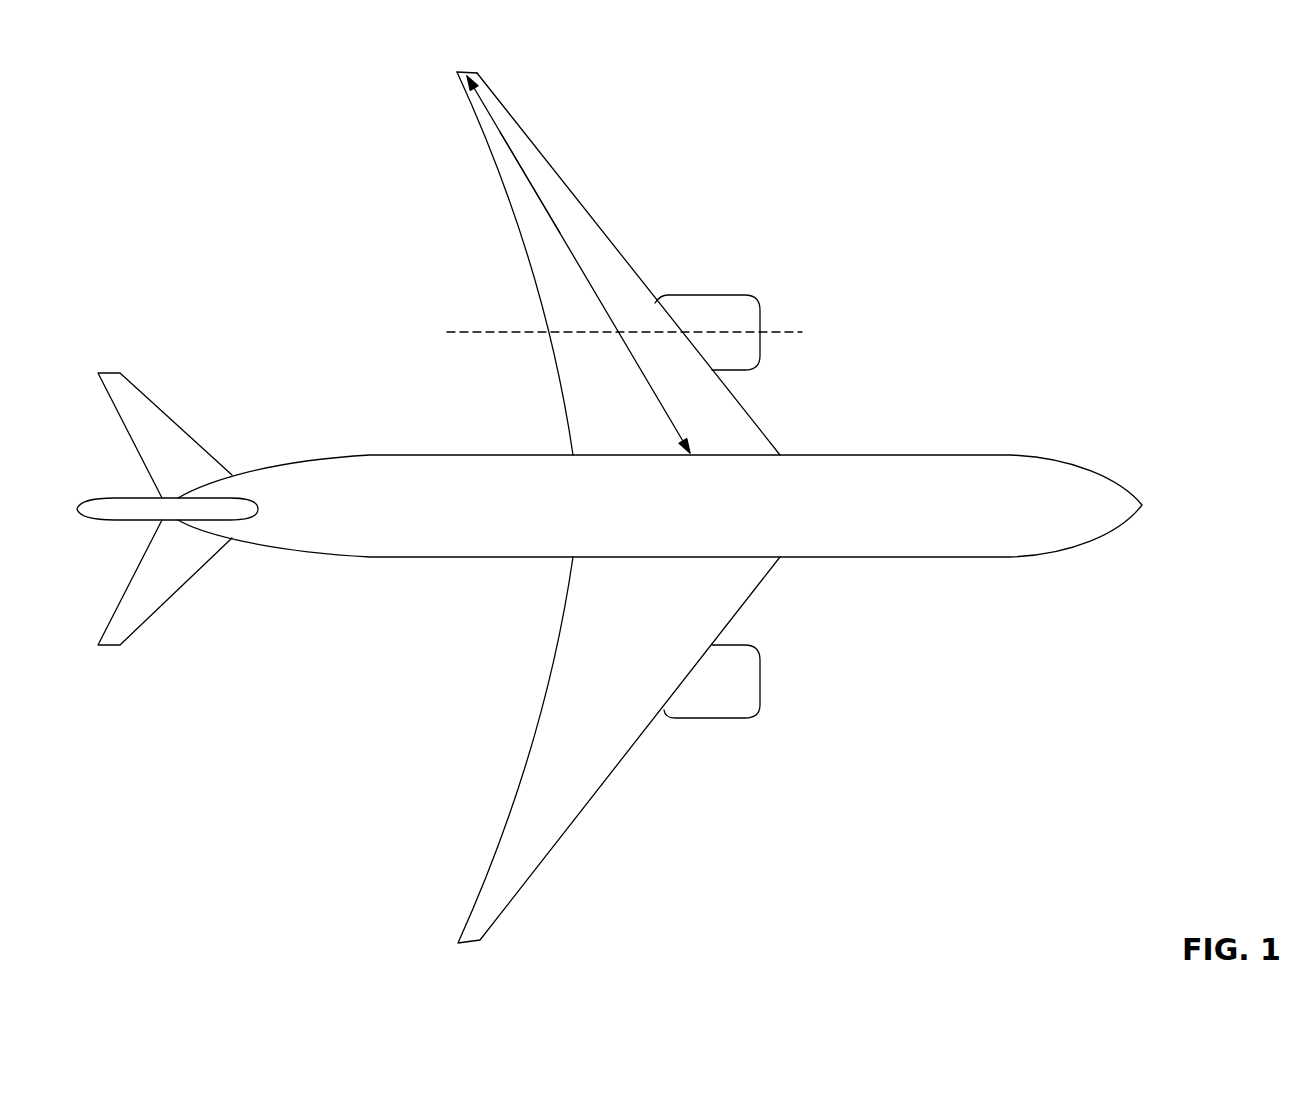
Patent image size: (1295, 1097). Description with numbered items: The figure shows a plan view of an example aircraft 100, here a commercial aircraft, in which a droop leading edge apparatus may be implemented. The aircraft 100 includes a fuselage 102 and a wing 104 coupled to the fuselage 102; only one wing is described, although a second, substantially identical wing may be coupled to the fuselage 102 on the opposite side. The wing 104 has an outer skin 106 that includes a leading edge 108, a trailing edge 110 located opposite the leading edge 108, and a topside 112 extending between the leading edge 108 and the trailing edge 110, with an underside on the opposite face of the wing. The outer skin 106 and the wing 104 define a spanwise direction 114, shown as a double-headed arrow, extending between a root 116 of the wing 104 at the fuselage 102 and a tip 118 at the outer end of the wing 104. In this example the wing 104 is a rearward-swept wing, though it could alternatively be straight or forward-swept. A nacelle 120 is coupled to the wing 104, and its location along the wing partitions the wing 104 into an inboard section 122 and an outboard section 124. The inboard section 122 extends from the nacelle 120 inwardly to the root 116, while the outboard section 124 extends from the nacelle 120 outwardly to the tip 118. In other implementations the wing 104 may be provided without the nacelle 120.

The aircraft 100 is at (972, 166).
The fuselage 102 is at (957, 455).
The wing 104 is at (642, 277).
The outer skin 106 is at (723, 425).
The leading edge 108 is at (608, 238).
The trailing edge 110 is at (527, 243).
The topside 112 is at (572, 217).
The spanwise direction 114 is at (527, 178).
The root 116 is at (603, 455).
The tip 118 is at (458, 70).
The nacelle 120 is at (760, 320).
The inboard section 122 is at (578, 362).
The outboard section 124 is at (557, 287).